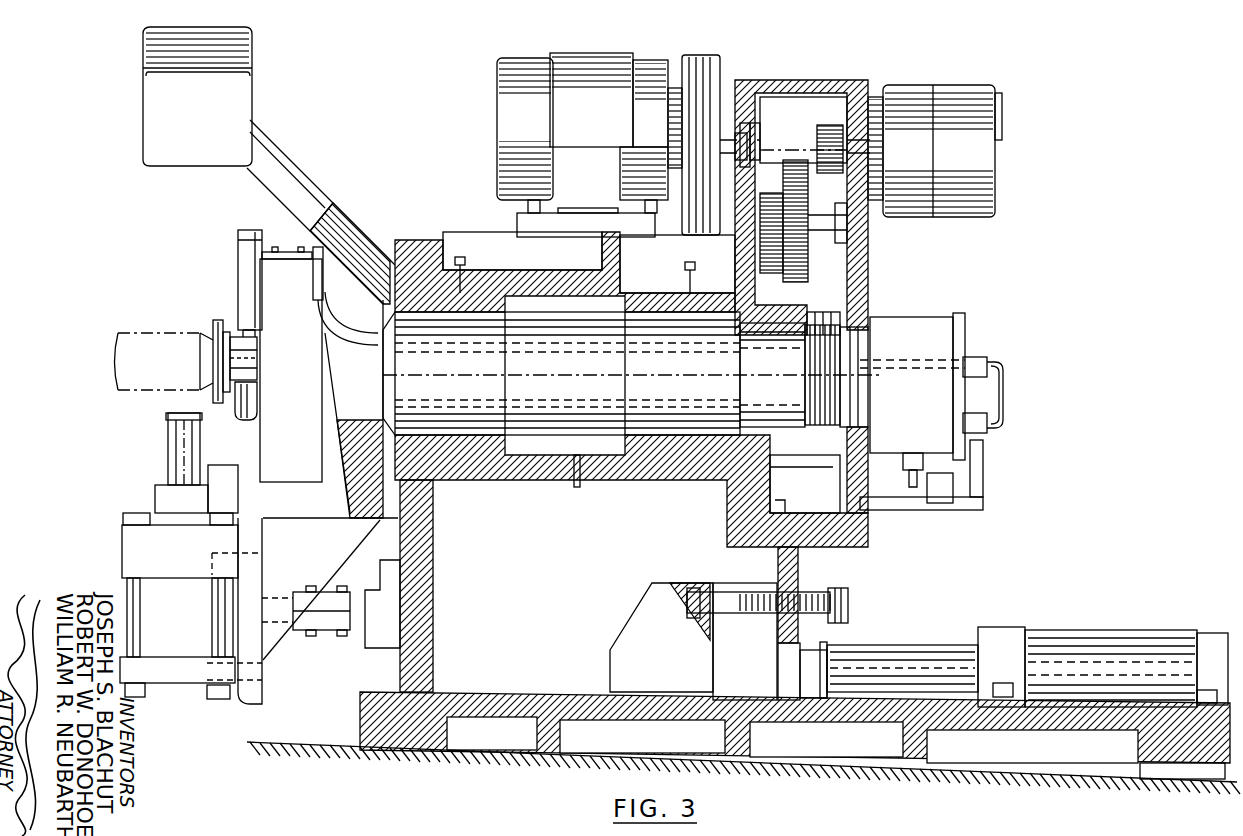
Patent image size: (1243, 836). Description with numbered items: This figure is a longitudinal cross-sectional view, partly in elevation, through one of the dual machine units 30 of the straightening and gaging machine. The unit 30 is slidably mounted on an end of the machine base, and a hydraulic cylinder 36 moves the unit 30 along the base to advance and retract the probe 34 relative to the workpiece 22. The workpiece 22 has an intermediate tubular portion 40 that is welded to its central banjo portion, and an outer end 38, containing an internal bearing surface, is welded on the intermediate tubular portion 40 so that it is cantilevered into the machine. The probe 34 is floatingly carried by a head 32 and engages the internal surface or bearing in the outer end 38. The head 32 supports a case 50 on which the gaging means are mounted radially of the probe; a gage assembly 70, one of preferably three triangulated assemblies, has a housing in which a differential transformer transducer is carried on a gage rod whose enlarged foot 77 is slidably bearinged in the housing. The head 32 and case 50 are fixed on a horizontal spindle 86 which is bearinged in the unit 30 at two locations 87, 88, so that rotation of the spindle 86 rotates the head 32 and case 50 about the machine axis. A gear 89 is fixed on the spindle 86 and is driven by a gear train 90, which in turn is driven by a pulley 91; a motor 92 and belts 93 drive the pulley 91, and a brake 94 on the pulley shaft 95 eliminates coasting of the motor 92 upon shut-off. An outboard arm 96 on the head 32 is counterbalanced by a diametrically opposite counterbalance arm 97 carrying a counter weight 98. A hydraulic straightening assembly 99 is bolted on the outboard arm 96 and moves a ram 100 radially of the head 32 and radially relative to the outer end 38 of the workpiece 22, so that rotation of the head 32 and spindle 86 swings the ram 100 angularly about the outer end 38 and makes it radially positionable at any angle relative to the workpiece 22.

The workpiece 22 is at (112, 367).
The dual machine unit 30 is at (453, 230).
The head 32 is at (333, 462).
The probe 34 is at (232, 414).
The hydraulic cylinder 36 is at (1083, 640).
The outer end of the workpiece 38 is at (212, 328).
The intermediate tubular portion 40 is at (142, 333).
The case 50 is at (301, 371).
The gage assembly 70 is at (233, 263).
The enlarged foot 77 is at (248, 335).
The horizontal spindle 86 is at (577, 391).
The spindle bearing 87 is at (498, 282).
The spindle bearing 88 is at (647, 280).
The gear 89 is at (773, 489).
The gear train 90 is at (810, 272).
The pulley 91 is at (722, 76).
The motor 92 is at (502, 57).
The belts 93 is at (698, 55).
The brake 94 is at (988, 148).
The pulley shaft 95 is at (781, 140).
The outboard arm 96 is at (238, 695).
The counterbalance arm 97 is at (298, 183).
The counter weight 98 is at (240, 88).
The hydraulic straightening assembly 99 is at (128, 556).
The ram 100 is at (168, 463).